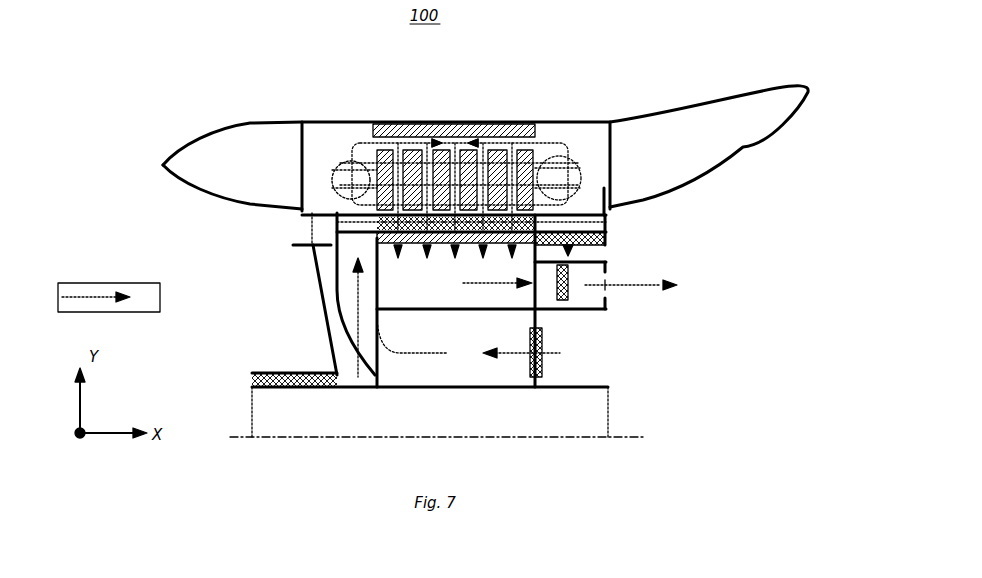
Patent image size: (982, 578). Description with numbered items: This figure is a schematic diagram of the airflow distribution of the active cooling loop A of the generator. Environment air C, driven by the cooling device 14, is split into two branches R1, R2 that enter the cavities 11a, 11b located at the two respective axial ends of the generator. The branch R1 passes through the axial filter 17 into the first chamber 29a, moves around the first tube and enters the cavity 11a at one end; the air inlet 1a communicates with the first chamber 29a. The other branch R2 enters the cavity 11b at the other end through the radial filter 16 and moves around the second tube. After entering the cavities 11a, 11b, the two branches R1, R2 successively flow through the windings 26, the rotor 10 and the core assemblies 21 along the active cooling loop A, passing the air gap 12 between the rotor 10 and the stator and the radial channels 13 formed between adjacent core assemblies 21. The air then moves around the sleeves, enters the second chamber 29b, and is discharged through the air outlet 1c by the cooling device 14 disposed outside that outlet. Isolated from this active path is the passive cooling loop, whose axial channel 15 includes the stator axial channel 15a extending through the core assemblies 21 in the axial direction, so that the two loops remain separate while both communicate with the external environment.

The rotor 10 is at (357, 122).
The cavity 11a is at (313, 187).
The cavity 11b is at (593, 183).
The air gap 12 is at (453, 140).
The core assemblies 21 is at (380, 157).
The windings 26 is at (343, 190).
The branch R1 is at (413, 121).
The branch R2 is at (517, 140).
The axial channel 15 is at (590, 220).
The stator axial channel 15a is at (373, 240).
The radial channels 13 is at (452, 247).
The air outlet 1c is at (530, 297).
The radial filter 16 is at (547, 243).
The cooling device 14 is at (568, 300).
The axial filter 17 is at (542, 360).
The second chamber 29b is at (387, 290).
The air inlet 1a is at (362, 370).
The first chamber 29a is at (453, 370).
The active cooling loop A is at (109, 297).
The environment air C is at (642, 286).